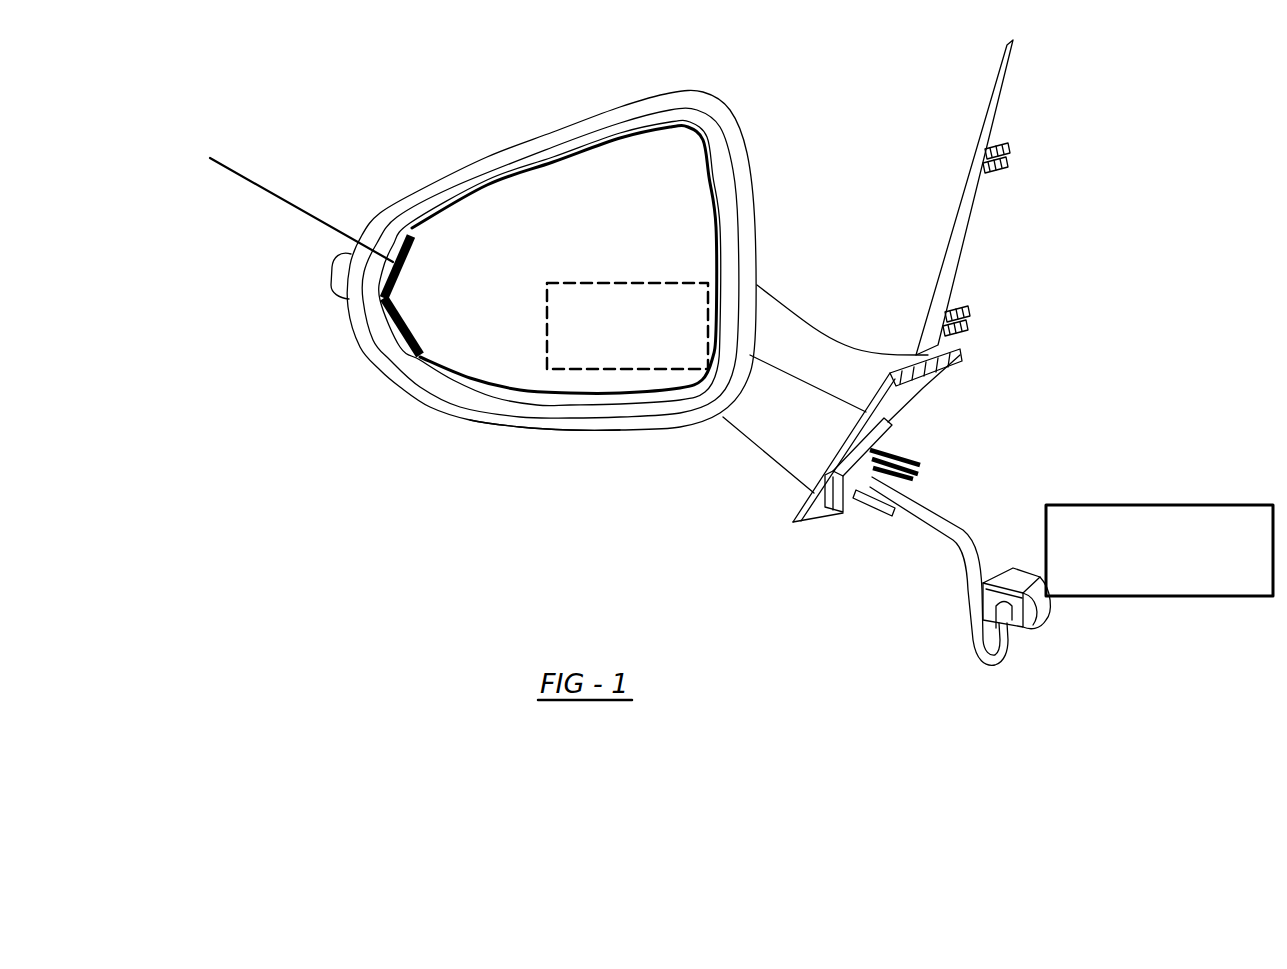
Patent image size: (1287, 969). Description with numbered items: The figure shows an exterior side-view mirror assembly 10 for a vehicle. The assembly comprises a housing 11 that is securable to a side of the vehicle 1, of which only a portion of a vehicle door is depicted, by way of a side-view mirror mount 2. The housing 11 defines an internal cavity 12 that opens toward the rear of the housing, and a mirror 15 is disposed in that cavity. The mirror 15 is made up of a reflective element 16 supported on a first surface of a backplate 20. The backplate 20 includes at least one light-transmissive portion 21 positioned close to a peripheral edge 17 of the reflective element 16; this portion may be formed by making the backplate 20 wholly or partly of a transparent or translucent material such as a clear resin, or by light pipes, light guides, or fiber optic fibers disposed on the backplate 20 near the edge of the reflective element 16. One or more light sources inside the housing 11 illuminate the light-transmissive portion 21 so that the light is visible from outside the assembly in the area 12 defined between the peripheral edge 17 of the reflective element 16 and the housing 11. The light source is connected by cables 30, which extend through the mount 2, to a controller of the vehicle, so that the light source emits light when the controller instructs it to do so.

The side-view mirror assembly 10 is at (442, 90).
The housing 11 is at (575, 111).
The internal cavity 12 is at (719, 203).
The mirror 15 is at (403, 222).
The reflective element 16 is at (626, 265).
The peripheral edge 17 is at (528, 392).
The backplate 20 is at (579, 400).
The light-transmissive portion 21 is at (400, 347).
The vehicle 1 is at (955, 205).
The side-view mirror mount 2 is at (798, 334).
The cables 30 is at (960, 528).